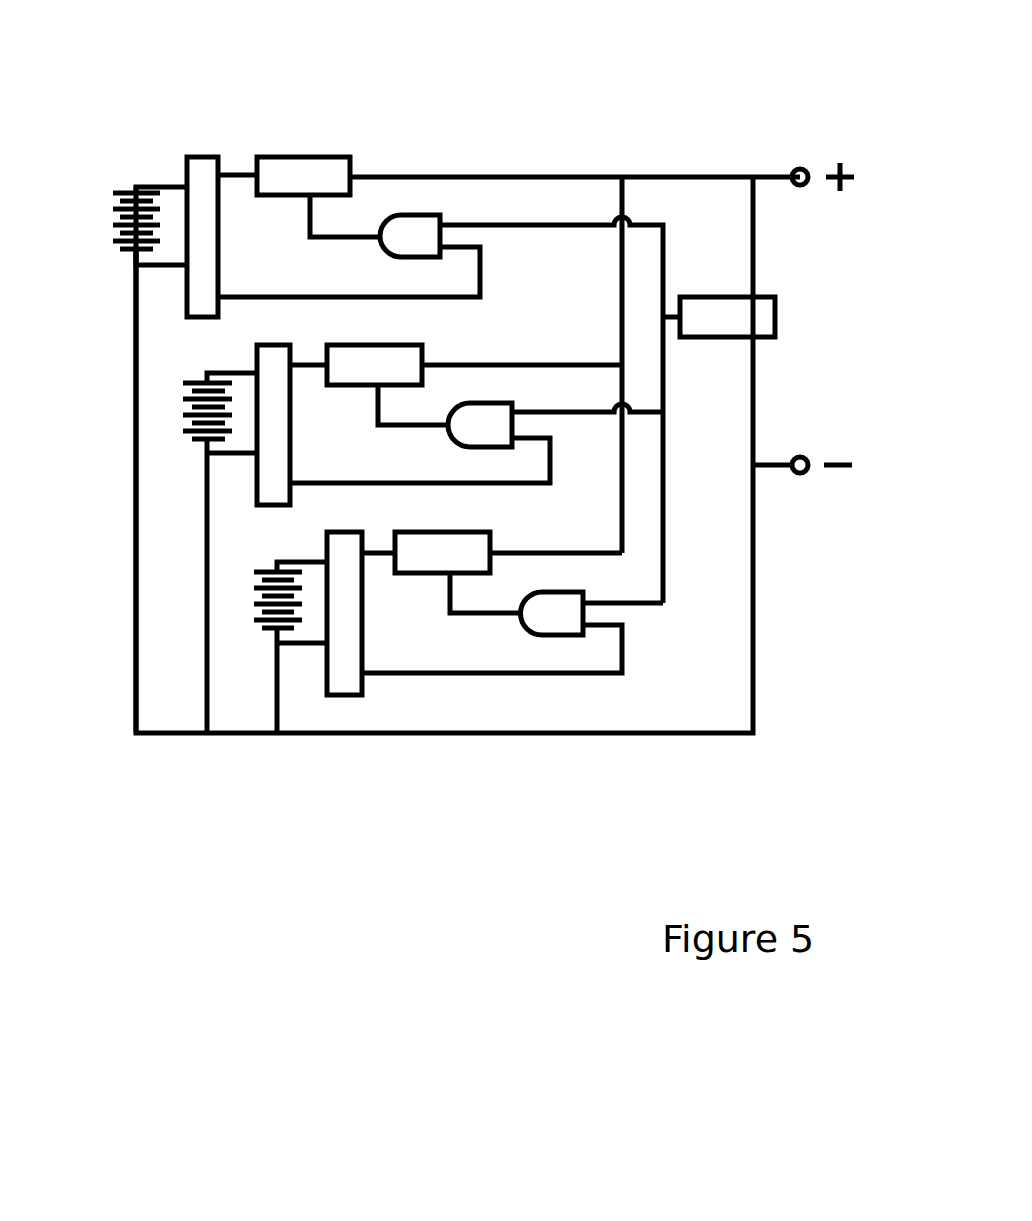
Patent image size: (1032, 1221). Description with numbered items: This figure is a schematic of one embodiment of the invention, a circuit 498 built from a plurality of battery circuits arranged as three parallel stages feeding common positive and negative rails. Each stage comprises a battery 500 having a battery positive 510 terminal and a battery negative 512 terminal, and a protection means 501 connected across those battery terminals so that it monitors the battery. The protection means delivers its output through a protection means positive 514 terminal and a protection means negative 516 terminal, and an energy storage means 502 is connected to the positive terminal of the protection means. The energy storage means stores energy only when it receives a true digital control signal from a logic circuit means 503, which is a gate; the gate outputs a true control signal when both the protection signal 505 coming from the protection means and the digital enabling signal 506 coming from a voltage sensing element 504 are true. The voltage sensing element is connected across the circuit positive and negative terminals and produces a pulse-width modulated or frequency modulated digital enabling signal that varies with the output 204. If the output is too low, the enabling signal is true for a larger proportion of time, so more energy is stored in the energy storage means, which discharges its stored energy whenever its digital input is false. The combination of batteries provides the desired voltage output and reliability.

The circuit 498 is at (292, 916).
The battery 500 is at (110, 229).
The protection means 501 is at (203, 217).
The energy storage means 502 is at (283, 172).
The logic circuit means 503 is at (410, 235).
The voltage sensing element 504 is at (728, 315).
The protection signal 505 is at (349, 272).
The digital enabling signal 506 is at (551, 390).
The battery positive terminal 510 is at (137, 192).
The battery negative terminal 512 is at (118, 287).
The protection means positive terminal 514 is at (362, 563).
The protection means negative terminal 516 is at (373, 693).
The output 204 is at (805, 190).